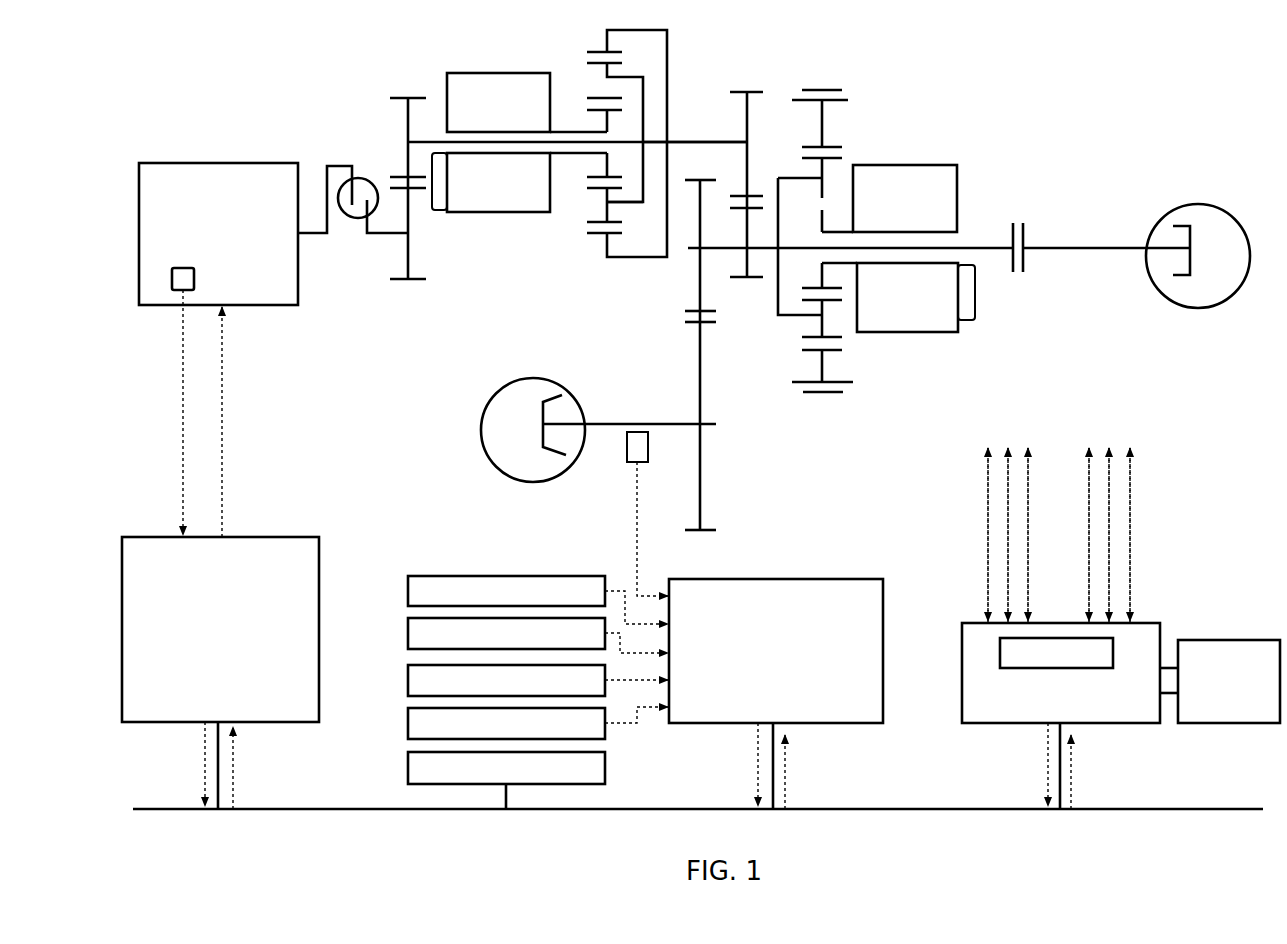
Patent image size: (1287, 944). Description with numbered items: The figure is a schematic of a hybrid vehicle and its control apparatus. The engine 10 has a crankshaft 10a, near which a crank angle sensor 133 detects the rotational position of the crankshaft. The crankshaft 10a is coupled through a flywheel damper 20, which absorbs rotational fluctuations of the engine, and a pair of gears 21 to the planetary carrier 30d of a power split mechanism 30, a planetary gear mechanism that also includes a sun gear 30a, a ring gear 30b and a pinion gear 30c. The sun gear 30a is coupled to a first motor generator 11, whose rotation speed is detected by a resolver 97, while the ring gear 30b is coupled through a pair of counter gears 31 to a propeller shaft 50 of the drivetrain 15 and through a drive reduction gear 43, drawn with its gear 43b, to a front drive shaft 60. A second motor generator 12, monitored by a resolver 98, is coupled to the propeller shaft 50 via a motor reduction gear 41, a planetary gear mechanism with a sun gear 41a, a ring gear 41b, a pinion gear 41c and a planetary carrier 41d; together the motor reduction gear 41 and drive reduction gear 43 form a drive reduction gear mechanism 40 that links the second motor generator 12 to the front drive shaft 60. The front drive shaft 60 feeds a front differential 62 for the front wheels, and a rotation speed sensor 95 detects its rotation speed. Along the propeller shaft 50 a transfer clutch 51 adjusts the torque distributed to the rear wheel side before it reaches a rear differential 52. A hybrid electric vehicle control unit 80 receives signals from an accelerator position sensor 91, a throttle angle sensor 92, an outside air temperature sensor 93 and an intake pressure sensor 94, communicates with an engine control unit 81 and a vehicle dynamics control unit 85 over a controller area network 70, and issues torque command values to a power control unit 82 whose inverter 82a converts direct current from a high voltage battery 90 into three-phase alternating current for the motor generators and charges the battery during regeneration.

The engine 10 is at (222, 160).
The crankshaft 10a is at (312, 230).
The first motor generator 11 is at (500, 214).
The second motor generator 12 is at (918, 163).
The drivetrain 15 is at (785, 74).
The flywheel damper 20 is at (357, 176).
The pair of gears 21 is at (392, 126).
The power split mechanism 30 is at (585, 73).
The sun gear 30a is at (603, 163).
The ring gear 30b is at (603, 245).
The pinion gear 30c is at (603, 203).
The planetary carrier 30d is at (648, 152).
The pair of gears 31 is at (727, 108).
The drive reduction gear mechanism 40 is at (834, 78).
The motor reduction gear 41 is at (857, 104).
The sun gear 41a is at (825, 277).
The ring gear 41b is at (826, 137).
The pinion gear 41c is at (825, 320).
The planetary carrier 41d is at (777, 282).
The drive reduction gear 43 is at (664, 297).
The counter gear 43b is at (705, 465).
The propeller shaft 50 is at (993, 250).
The transfer clutch 51 is at (1022, 218).
The rear differential 52 is at (1188, 205).
The front drive shaft 60 is at (633, 420).
The front differential 62 is at (480, 424).
The controller area network 70 is at (958, 806).
The hybrid electric vehicle control unit 80 is at (840, 725).
The engine control unit 81 is at (285, 726).
The power control unit 82 is at (1120, 725).
The inverter 82a is at (1000, 652).
The vehicle dynamics control unit 85 is at (406, 764).
The high voltage battery 90 is at (1230, 725).
The accelerator position sensor 91 is at (406, 592).
The throttle angle sensor 92 is at (406, 634).
The outside air temperature sensor 93 is at (406, 680).
The intake pressure sensor 94 is at (406, 722).
The rotation speed sensor 95 is at (625, 455).
The resolver 97 is at (440, 212).
The resolver 98 is at (967, 322).
The crank angle sensor 133 is at (196, 278).